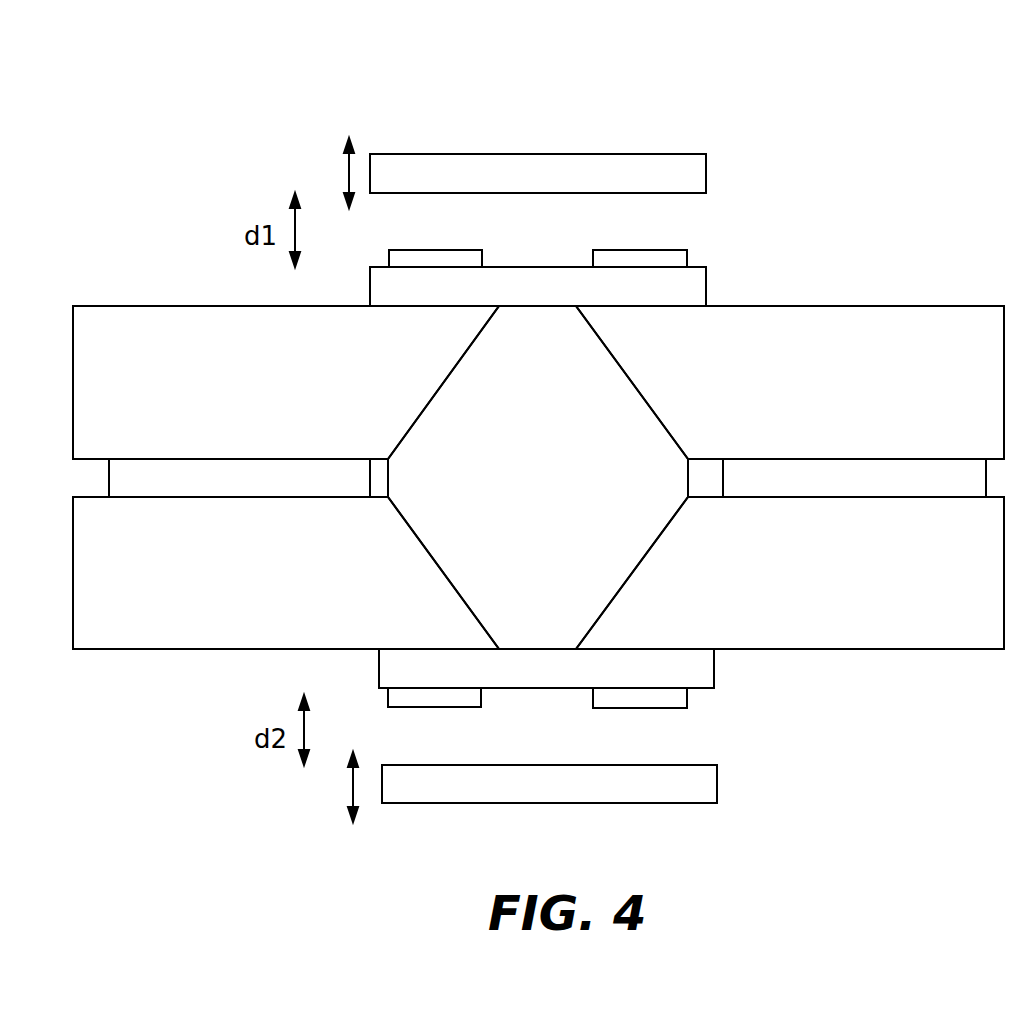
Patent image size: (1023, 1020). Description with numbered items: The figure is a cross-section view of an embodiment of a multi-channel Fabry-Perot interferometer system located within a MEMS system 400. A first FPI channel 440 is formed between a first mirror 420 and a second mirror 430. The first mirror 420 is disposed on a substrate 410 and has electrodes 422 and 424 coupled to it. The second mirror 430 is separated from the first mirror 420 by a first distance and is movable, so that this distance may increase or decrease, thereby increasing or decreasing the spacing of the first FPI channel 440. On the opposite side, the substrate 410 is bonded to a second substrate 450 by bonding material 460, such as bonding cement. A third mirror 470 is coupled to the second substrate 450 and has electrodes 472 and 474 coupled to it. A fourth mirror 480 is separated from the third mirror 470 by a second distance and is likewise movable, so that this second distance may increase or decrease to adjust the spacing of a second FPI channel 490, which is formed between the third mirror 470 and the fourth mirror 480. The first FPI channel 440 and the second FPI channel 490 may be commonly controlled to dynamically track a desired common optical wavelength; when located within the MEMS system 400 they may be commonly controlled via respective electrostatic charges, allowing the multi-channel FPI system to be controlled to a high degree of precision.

The MEMS system 400 is at (927, 62).
The substrate 410 is at (538, 382).
The first mirror 420 is at (538, 286).
The electrode 422 is at (437, 250).
The electrode 424 is at (687, 258).
The second mirror 430 is at (538, 173).
The first FPI channel 440 is at (700, 220).
The second substrate 450 is at (538, 573).
The bonding material 460 is at (547, 478).
The third mirror 470 is at (546, 668).
The electrode 472 is at (442, 708).
The electrode 474 is at (687, 702).
The fourth mirror 480 is at (549, 784).
The second FPI channel 490 is at (715, 735).